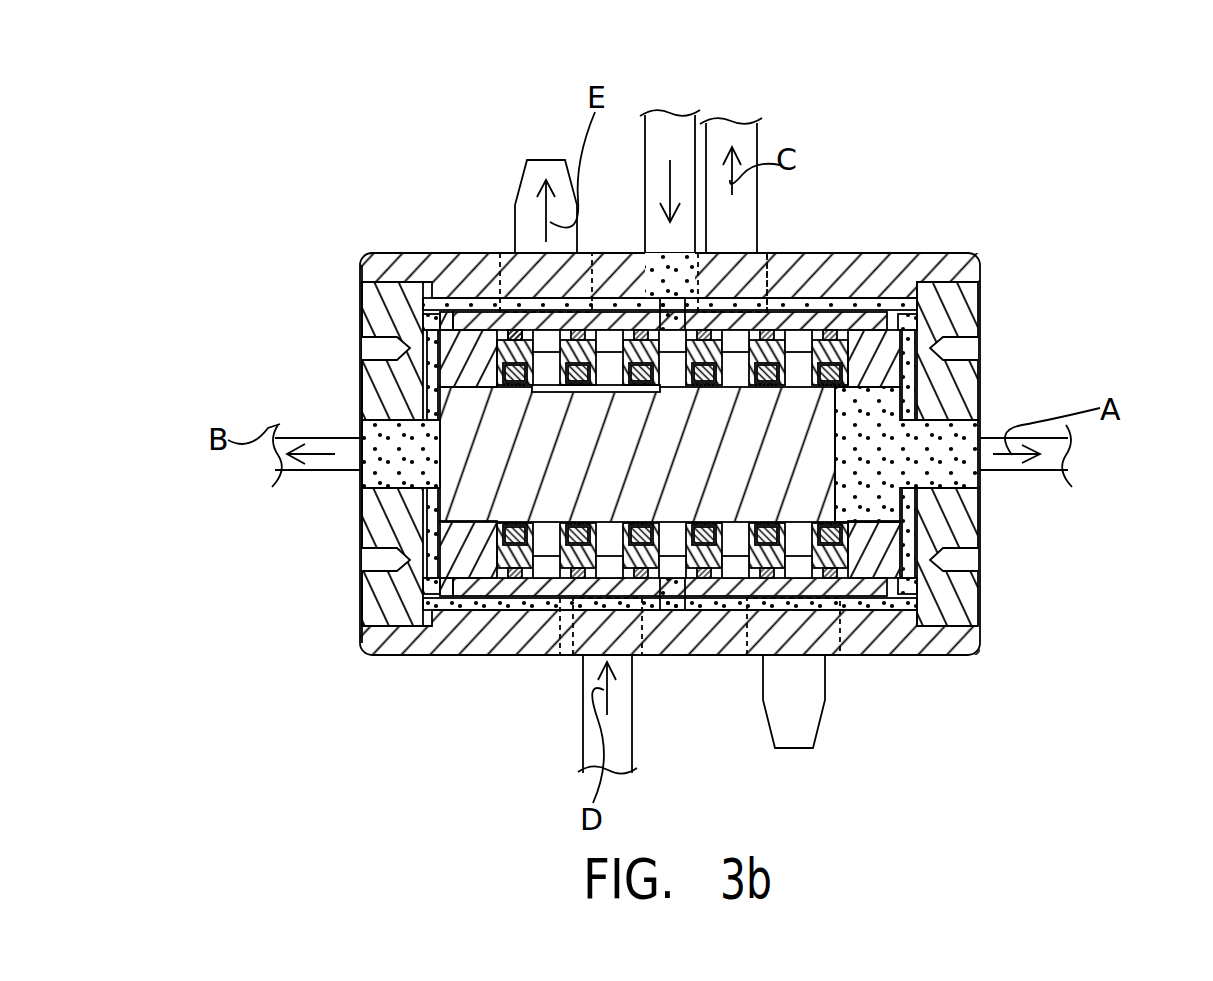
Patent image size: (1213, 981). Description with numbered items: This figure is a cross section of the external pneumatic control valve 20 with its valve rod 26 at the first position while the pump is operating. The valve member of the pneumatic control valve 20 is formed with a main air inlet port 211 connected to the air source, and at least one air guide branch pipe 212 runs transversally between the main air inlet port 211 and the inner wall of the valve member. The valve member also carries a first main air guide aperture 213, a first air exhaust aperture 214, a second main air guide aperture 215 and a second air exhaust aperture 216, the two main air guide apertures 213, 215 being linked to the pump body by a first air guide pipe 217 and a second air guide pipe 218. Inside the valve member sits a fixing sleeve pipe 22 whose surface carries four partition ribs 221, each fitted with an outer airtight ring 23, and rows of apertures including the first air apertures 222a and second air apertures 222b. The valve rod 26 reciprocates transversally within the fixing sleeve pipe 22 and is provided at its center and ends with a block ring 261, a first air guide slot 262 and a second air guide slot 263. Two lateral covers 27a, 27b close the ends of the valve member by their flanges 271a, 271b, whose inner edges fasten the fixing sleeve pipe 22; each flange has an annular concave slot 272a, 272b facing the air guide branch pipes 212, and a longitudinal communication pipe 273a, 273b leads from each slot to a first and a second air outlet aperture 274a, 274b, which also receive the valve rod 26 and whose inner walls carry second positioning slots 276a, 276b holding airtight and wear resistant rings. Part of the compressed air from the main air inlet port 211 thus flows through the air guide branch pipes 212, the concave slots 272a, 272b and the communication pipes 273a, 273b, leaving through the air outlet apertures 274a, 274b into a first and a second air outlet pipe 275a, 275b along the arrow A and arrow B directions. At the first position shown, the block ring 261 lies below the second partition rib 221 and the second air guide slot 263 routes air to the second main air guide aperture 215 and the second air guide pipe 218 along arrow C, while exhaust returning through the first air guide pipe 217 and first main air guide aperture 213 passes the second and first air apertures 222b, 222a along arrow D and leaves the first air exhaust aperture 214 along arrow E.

The external pneumatic control valve 20 is at (912, 255).
The main air inlet port 211 is at (653, 265).
The air guide branch pipe 212 is at (462, 300).
The first main air guide aperture 213 is at (560, 660).
The first air exhaust aperture 214 is at (500, 290).
The second main air guide aperture 215 is at (768, 253).
The second air exhaust aperture 216 is at (740, 650).
The first air guide pipe 217 is at (590, 757).
The second air guide pipe 218 is at (746, 144).
The fixing sleeve pipe 22 is at (705, 598).
The partition rib 221 is at (660, 600).
The first air apertures 222a is at (540, 315).
The second air apertures 222b is at (540, 600).
The outer airtight ring 23 is at (822, 330).
The valve rod 26 is at (467, 500).
The block ring 261 is at (625, 345).
The first air guide slot 262 is at (552, 392).
The second air guide slot 263 is at (720, 503).
The lateral cover 27a is at (972, 302).
The lateral cover 27b is at (372, 305).
The flange 271a is at (865, 585).
The flange 271b is at (470, 590).
The annular concave slot 272a is at (935, 325).
The annular concave slot 272b is at (410, 322).
The communication pipe 273a is at (972, 356).
The communication pipe 273b is at (405, 350).
The first air outlet aperture 274a is at (968, 424).
The second air outlet aperture 274b is at (360, 428).
The first air outlet pipe 275a is at (1050, 463).
The second air outlet pipe 275b is at (315, 465).
The second positioning slot 276a is at (847, 537).
The second positioning slot 276b is at (505, 550).